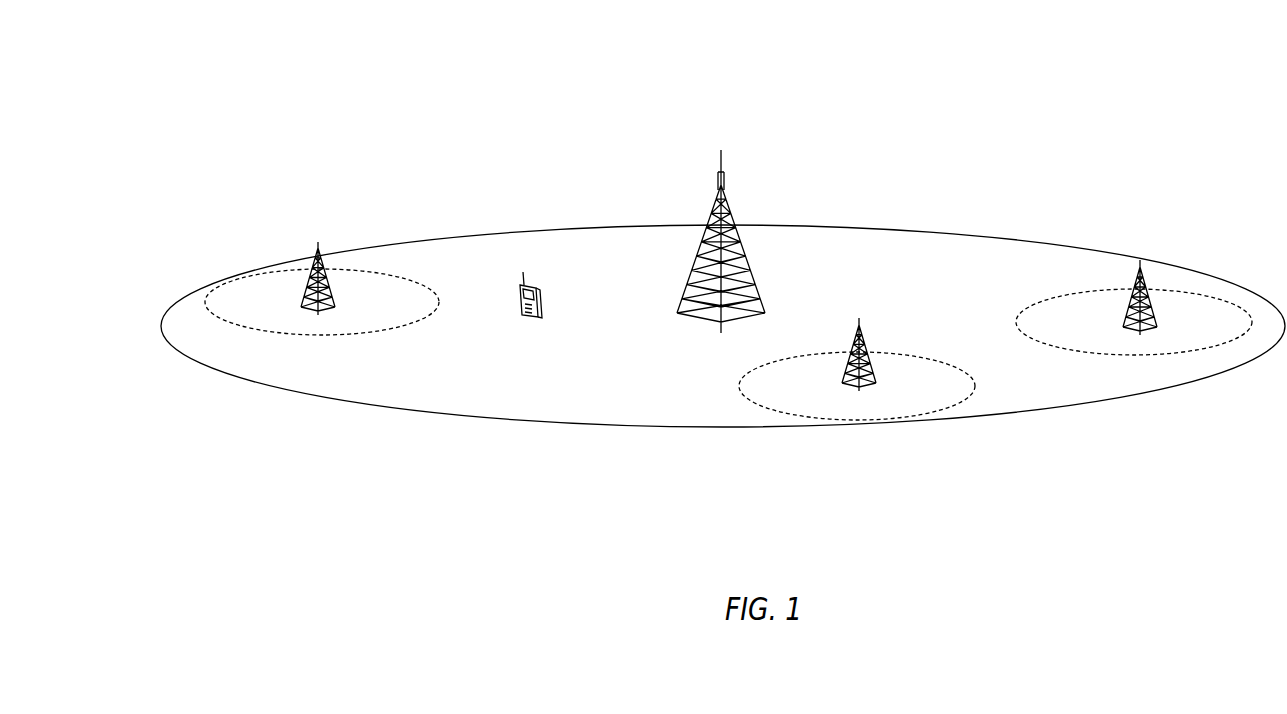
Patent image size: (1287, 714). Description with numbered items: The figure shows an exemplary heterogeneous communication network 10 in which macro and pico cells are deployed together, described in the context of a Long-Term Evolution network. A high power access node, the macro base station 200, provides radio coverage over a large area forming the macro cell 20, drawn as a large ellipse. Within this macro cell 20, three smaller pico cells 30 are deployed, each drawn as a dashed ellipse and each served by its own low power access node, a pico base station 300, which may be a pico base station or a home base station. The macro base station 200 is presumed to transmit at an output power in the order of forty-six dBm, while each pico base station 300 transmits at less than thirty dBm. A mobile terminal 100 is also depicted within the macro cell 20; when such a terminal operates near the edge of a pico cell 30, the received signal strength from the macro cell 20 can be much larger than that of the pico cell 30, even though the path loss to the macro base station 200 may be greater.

The heterogeneous communication network 10 is at (985, 80).
The macro cell 20 is at (480, 418).
The pico cell 30 is at (422, 322).
The mobile terminal 100 is at (523, 280).
The macro base station 200 is at (713, 198).
The pico base station 300 is at (318, 262).